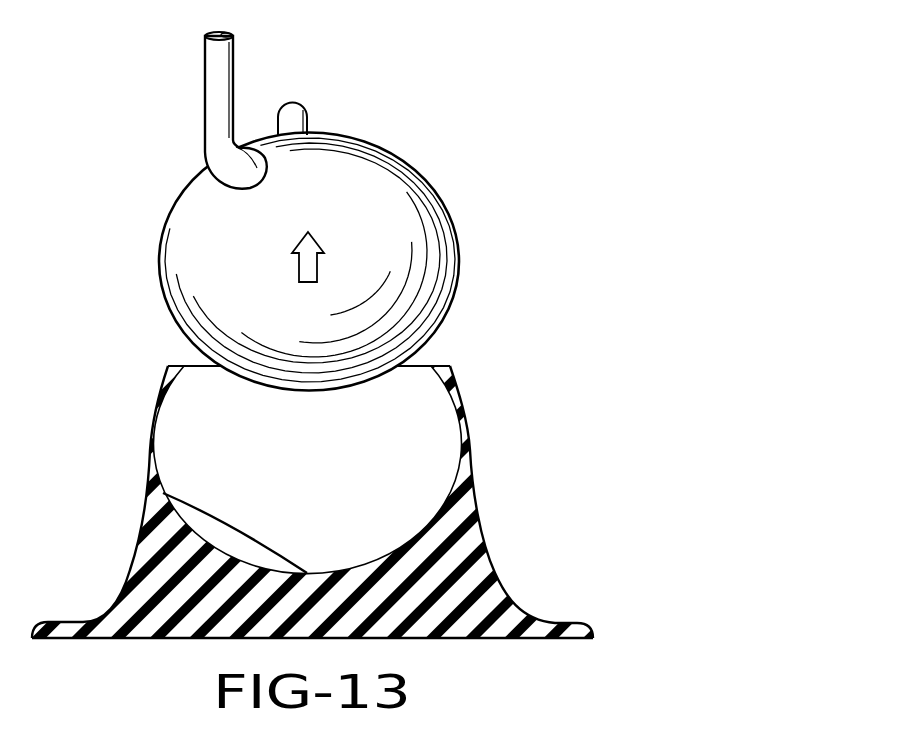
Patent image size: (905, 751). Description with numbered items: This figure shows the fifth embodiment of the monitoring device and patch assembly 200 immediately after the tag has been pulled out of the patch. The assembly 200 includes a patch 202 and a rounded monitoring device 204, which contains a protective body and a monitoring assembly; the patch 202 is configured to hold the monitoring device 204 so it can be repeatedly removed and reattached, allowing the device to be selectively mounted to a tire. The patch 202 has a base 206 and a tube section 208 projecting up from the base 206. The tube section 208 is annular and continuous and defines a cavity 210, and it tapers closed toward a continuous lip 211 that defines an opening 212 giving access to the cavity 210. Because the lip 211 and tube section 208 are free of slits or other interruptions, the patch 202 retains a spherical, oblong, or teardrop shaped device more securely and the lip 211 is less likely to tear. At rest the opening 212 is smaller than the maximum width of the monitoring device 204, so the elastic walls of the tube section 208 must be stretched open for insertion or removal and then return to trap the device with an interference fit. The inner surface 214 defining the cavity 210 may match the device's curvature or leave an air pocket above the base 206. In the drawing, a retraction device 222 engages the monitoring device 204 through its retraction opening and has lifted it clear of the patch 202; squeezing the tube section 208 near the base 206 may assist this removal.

The monitoring device and patch assembly 200 is at (518, 217).
The patch 202 is at (506, 574).
The monitoring device 204 is at (390, 143).
The base 206 is at (486, 632).
The tube section 208 is at (160, 418).
The cavity 210 is at (394, 462).
The lip 211 is at (174, 365).
The opening 212 is at (410, 373).
The inner surface 214 is at (165, 492).
The retraction device 222 is at (212, 74).